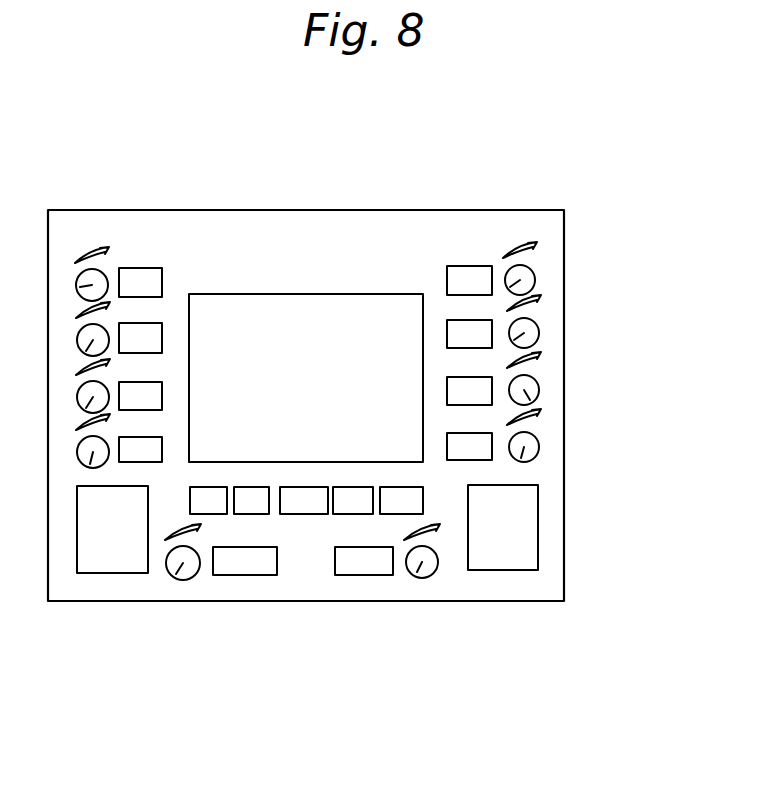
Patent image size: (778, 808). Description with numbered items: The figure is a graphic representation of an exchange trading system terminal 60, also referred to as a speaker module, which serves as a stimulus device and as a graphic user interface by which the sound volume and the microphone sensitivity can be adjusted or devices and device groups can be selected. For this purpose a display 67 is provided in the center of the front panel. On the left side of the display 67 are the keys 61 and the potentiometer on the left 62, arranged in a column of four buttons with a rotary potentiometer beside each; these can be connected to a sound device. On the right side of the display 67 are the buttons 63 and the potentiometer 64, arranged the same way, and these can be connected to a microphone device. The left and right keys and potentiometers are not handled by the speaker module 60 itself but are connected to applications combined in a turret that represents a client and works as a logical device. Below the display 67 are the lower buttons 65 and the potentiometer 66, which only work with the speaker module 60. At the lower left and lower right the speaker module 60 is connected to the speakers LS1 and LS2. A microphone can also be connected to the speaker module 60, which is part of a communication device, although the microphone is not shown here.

The exchange trading system terminal 60 is at (320, 208).
The keys 61 is at (153, 337).
The potentiometer on the left 62 is at (110, 335).
The buttons 63 is at (447, 338).
The potentiometer 64 is at (540, 335).
The lower buttons 65 is at (320, 505).
The potentiometer 66 is at (418, 567).
The display 67 is at (263, 317).
The speaker LS1 is at (97, 565).
The speaker LS2 is at (518, 562).